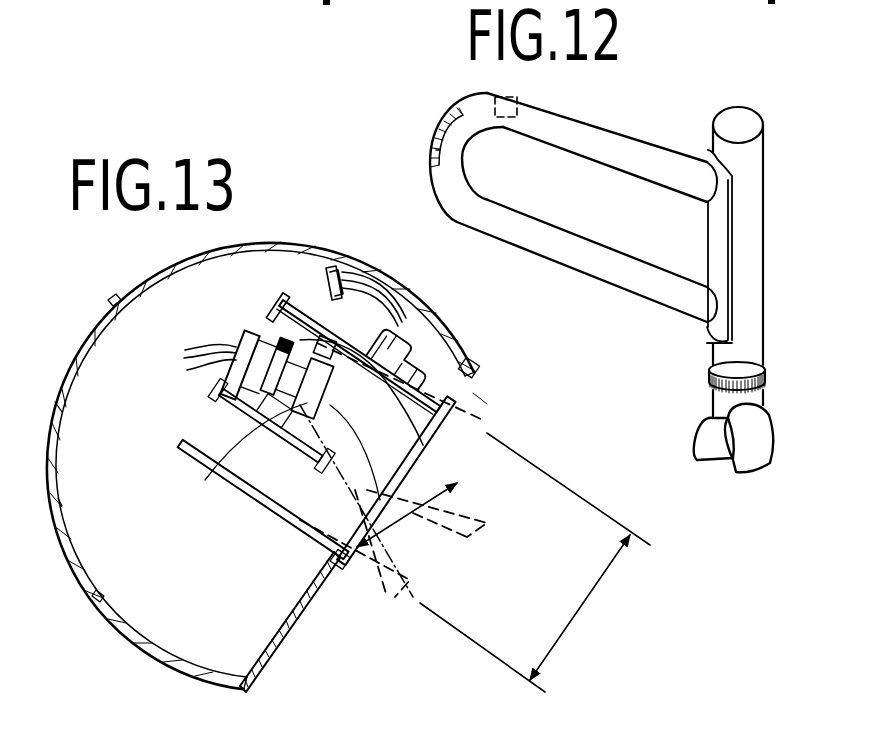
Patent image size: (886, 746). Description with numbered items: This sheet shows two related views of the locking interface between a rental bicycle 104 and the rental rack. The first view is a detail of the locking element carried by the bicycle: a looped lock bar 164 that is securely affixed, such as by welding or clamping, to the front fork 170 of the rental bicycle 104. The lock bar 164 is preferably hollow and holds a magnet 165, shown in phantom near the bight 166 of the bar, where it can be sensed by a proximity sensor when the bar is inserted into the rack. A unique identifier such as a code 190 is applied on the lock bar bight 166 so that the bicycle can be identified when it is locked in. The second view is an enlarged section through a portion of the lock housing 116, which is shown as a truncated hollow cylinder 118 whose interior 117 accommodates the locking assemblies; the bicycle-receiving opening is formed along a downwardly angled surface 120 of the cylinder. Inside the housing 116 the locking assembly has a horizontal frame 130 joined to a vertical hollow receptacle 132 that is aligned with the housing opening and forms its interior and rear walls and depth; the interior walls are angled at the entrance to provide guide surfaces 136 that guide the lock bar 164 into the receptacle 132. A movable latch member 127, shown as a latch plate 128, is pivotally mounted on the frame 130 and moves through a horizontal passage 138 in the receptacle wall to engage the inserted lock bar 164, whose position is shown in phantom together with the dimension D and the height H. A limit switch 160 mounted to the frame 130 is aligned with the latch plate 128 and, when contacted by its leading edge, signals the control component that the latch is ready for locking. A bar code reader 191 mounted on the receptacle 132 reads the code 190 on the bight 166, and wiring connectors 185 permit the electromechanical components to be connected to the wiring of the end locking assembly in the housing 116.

In FIG. 12, the rental bicycle 104 is at (800, 344).
In FIG. 13, the lock housing 116 is at (113, 293).
In FIG. 13, the interior 117 is at (58, 498).
In FIG. 13, the truncated hollow cylinder 118 is at (55, 402).
In FIG. 13, the downwardly angled surface 120 is at (252, 684).
In FIG. 13, the movable latch member 127 is at (294, 392).
In FIG. 13, the latch plate 128 is at (217, 467).
In FIG. 13, the frame 130 is at (272, 318).
In FIG. 13, the hollow receptacle 132 is at (304, 312).
In FIG. 13, the guide surfaces 136 is at (370, 490).
In FIG. 13, the horizontal passage 138 is at (360, 428).
In FIG. 13, the limit switch 160 is at (412, 330).
In FIG. 12, the lock bar 164 is at (437, 126).
In FIG. 13, the lock bar 164 is at (470, 510).
In FIG. 12, the magnet 165 is at (522, 104).
In FIG. 12, the bight 166 is at (470, 114).
In FIG. 13, the bight 166 is at (484, 420).
In FIG. 12, the front fork 170 is at (748, 222).
In FIG. 13, the wiring connectors 185 is at (330, 265).
In FIG. 12, the code 190 is at (436, 150).
In FIG. 13, the bar code reader 191 is at (215, 372).
In FIG. 13, the distance D is at (440, 510).
In FIG. 13, the height H is at (578, 607).